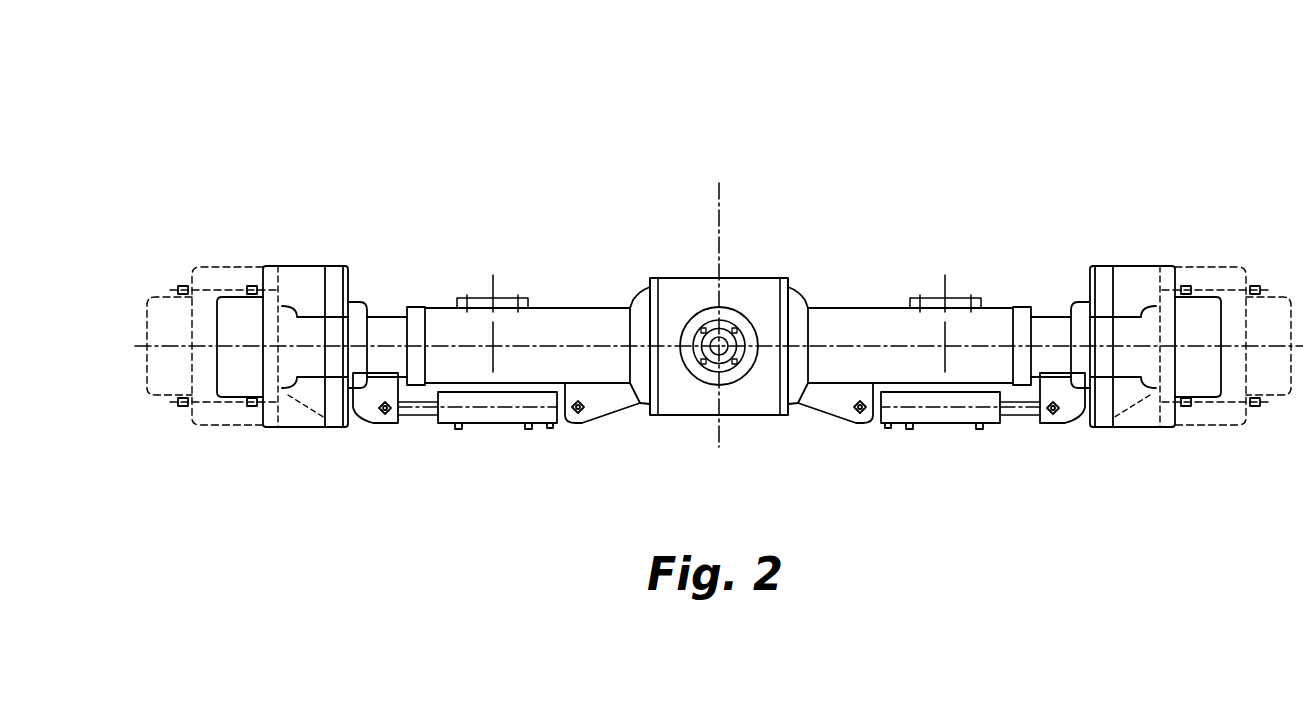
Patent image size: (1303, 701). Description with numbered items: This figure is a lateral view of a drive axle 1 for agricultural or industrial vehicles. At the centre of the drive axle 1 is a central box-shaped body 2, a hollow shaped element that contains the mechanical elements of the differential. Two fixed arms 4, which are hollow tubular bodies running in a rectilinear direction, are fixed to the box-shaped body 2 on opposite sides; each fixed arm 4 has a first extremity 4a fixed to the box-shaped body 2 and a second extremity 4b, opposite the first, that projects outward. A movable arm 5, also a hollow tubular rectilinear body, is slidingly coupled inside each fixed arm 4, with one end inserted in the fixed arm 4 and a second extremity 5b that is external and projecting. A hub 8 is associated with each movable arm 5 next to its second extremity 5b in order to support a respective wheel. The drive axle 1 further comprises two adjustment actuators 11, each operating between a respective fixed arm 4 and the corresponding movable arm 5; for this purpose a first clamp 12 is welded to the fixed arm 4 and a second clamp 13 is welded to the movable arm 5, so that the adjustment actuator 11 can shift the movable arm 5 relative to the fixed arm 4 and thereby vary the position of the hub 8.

The drive axle 1 is at (1222, 135).
The central box-shaped body 2 is at (753, 290).
The fixed arm 4 is at (546, 328).
The first extremity of fixed arm 4a is at (617, 332).
The second extremity of fixed arm 4b is at (415, 323).
The movable arm 5 is at (388, 306).
The second extremity of movable arm 5b is at (360, 307).
The hub 8 is at (298, 283).
The adjustment actuator 11 is at (490, 427).
The first clamp 12 is at (605, 400).
The second clamp 13 is at (372, 390).